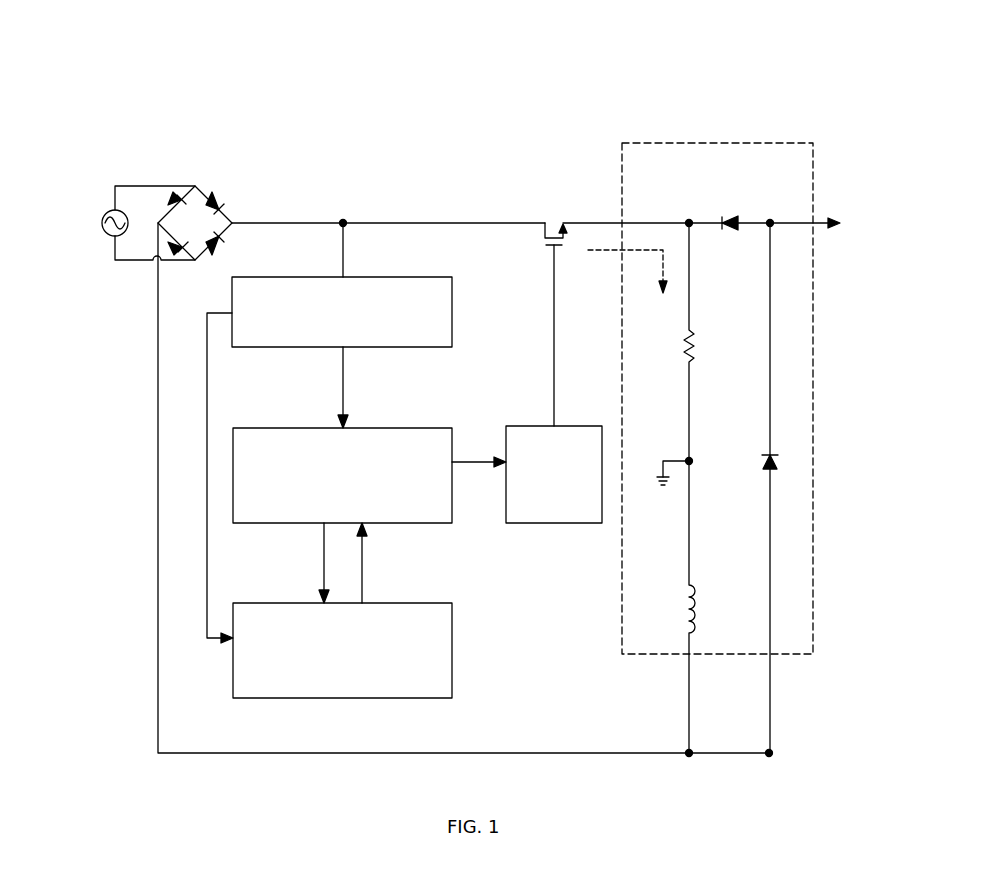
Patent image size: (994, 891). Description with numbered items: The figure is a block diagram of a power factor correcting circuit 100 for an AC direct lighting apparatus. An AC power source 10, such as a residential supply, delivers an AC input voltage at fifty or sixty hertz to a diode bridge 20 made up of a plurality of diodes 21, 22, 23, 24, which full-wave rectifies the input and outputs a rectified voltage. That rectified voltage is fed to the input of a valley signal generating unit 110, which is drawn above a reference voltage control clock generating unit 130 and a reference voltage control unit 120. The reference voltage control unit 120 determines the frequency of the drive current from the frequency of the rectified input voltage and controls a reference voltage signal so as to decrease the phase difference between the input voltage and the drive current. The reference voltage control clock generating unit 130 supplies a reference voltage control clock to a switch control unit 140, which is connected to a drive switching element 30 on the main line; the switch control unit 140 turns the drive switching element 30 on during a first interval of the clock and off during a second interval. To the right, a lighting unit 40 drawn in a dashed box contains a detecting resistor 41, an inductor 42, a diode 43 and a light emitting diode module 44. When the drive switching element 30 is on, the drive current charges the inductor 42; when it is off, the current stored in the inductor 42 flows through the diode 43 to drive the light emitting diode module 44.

The power factor correcting circuit 100 is at (498, 47).
The AC power source 10 is at (104, 235).
The diode bridge 20 is at (211, 186).
The diode 21 is at (182, 192).
The diode 22 is at (221, 193).
The diode 23 is at (182, 252).
The diode 24 is at (222, 252).
The drive switching element 30 is at (553, 190).
The lighting unit 40 is at (713, 143).
The detecting resistor 41 is at (682, 342).
The inductor 42 is at (682, 608).
The diode 43 is at (763, 462).
The LED module 44 is at (723, 218).
The valley signal generating unit 110 is at (392, 276).
The reference voltage control unit 120 is at (392, 602).
The reference voltage control clock generating unit 130 is at (392, 427).
The switch control unit 140 is at (557, 525).